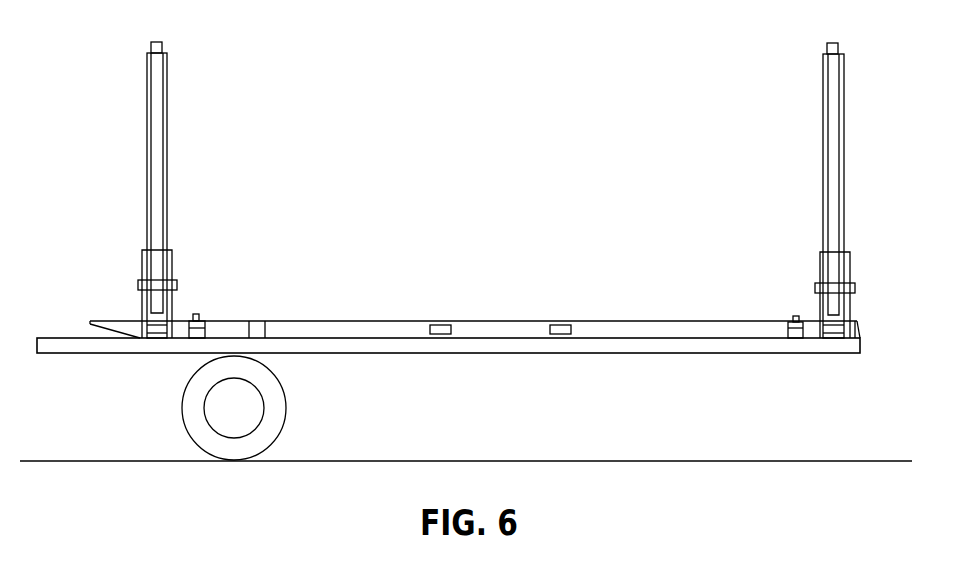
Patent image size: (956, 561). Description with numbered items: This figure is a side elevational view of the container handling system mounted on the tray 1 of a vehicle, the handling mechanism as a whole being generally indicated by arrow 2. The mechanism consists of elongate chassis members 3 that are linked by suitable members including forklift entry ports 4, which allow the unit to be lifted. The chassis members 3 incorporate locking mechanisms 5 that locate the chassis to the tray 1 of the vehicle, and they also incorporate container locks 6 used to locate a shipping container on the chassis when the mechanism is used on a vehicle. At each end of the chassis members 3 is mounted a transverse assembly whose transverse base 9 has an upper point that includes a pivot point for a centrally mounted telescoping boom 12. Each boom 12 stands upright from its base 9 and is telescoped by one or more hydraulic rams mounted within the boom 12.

The tray 1 is at (62, 344).
The mechanism 2 is at (708, 291).
The chassis members 3 is at (626, 328).
The forklift entry ports 4 is at (439, 339).
The locking mechanisms 5 is at (258, 319).
The container locks 6 is at (197, 313).
The transverse base 9 is at (174, 266).
The telescoping boom 12 is at (163, 118).